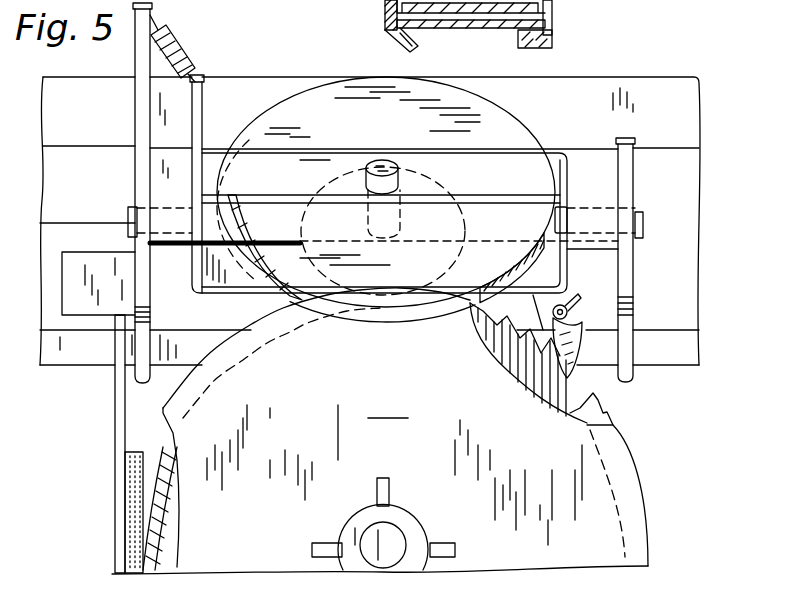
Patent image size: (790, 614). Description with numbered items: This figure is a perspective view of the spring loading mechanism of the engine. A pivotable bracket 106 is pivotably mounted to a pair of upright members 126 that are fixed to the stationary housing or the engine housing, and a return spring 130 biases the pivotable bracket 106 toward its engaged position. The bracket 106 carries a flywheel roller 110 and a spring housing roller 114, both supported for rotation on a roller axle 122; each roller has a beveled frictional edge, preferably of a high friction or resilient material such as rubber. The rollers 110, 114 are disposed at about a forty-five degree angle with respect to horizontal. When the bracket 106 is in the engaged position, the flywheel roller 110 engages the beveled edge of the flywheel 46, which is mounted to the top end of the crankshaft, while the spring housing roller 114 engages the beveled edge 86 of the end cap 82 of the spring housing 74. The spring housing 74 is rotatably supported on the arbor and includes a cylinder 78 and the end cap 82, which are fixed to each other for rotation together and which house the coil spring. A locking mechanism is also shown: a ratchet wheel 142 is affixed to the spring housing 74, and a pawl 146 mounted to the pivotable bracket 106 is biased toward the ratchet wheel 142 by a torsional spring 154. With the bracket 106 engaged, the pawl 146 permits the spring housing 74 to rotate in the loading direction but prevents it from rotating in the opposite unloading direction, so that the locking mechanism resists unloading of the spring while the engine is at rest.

The flywheel 46 is at (668, 121).
The spring housing 74 is at (640, 460).
The cylinder 78 is at (455, 30).
The end cap 82 is at (380, 431).
The beveled edge 86 is at (406, 48).
The pivotable bracket 106 is at (553, 162).
The flywheel roller 110 is at (484, 111).
The spring housing roller 114 is at (367, 322).
The roller axle 122 is at (404, 130).
The upright members 126 is at (135, 112).
The return spring 130 is at (174, 53).
The ratchet wheel 142 is at (548, 42).
The pawl 146 is at (593, 358).
The torsional spring 154 is at (578, 313).